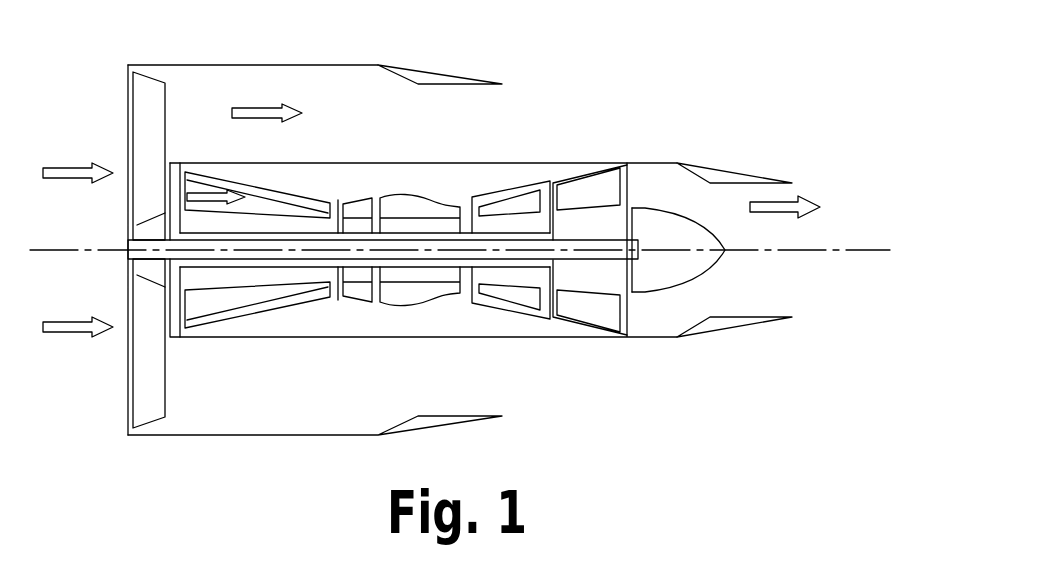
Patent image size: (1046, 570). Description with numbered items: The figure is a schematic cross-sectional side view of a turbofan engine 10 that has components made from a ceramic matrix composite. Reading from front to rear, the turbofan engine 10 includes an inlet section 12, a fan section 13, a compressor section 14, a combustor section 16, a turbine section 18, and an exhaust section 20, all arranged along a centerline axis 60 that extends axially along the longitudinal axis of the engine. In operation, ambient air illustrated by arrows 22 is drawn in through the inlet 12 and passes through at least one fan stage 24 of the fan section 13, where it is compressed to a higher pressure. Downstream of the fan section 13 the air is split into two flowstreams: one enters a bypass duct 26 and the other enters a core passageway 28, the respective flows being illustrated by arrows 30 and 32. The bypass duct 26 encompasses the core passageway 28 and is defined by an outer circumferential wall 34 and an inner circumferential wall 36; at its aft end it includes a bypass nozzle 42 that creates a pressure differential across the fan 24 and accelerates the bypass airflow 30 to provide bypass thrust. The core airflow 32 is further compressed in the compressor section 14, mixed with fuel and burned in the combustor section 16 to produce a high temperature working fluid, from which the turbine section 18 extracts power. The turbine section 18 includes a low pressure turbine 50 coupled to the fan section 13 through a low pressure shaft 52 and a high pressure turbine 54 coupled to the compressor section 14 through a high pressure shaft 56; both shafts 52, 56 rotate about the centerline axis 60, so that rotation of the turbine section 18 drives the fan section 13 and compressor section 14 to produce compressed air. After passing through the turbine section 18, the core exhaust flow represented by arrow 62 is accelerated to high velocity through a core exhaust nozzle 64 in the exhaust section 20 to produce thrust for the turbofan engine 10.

The turbofan engine 10 is at (582, 48).
The inlet section 12 is at (128, 121).
The fan section 13 is at (150, 378).
The compressor section 14 is at (290, 181).
The combustor section 16 is at (407, 316).
The turbine section 18 is at (546, 161).
The exhaust section 20 is at (773, 153).
The air 22 is at (65, 178).
The fan stage 24 is at (146, 92).
The bypass duct 26 is at (235, 83).
The core passageway 28 is at (212, 305).
The bypass airflow arrows 30 is at (248, 119).
The core airflow arrows 32 is at (200, 192).
The outer circumferential wall 34 is at (370, 62).
The inner circumferential wall 36 is at (390, 162).
The bypass nozzle 42 is at (485, 82).
The low pressure turbine 50 is at (601, 190).
The low pressure shaft 52 is at (315, 262).
The high pressure turbine 54 is at (503, 208).
The high pressure shaft 56 is at (470, 267).
The centerline axis 60 is at (838, 252).
The core exhaust flow 62 is at (766, 215).
The core exhaust nozzle 64 is at (733, 322).